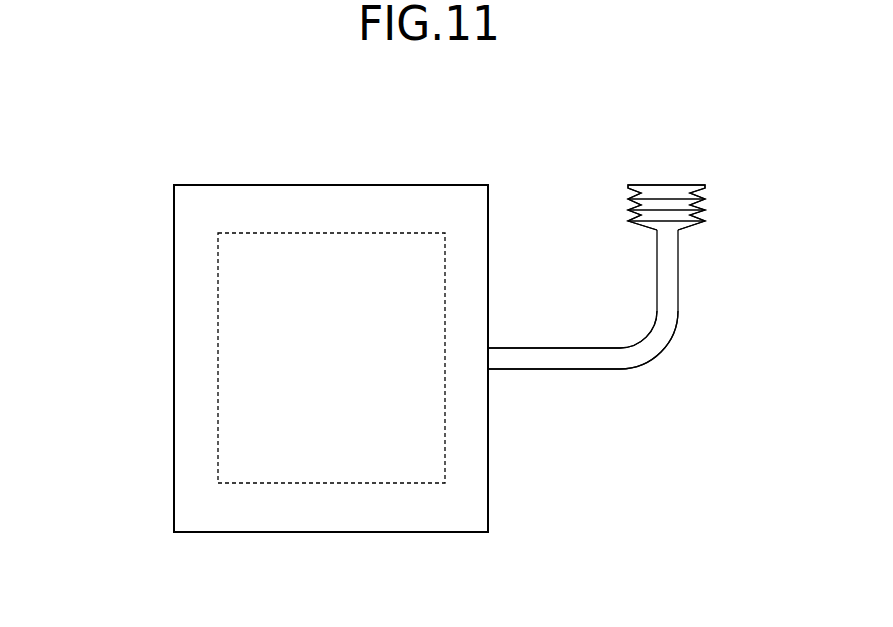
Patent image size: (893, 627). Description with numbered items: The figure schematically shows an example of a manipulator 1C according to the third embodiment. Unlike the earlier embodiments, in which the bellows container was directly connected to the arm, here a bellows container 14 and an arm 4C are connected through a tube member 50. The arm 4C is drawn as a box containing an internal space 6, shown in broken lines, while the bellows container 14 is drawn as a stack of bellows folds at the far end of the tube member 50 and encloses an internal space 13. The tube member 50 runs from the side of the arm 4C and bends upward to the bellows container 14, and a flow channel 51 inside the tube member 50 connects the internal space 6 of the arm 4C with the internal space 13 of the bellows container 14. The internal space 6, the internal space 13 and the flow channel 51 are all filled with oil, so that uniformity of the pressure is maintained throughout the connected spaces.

The manipulator 1C is at (118, 198).
The arm 4C is at (378, 185).
The internal space 6 is at (278, 233).
The tube member 50 is at (673, 333).
The flow channel 51 is at (592, 362).
The bellows container 14 is at (703, 186).
The internal space 13 is at (686, 207).